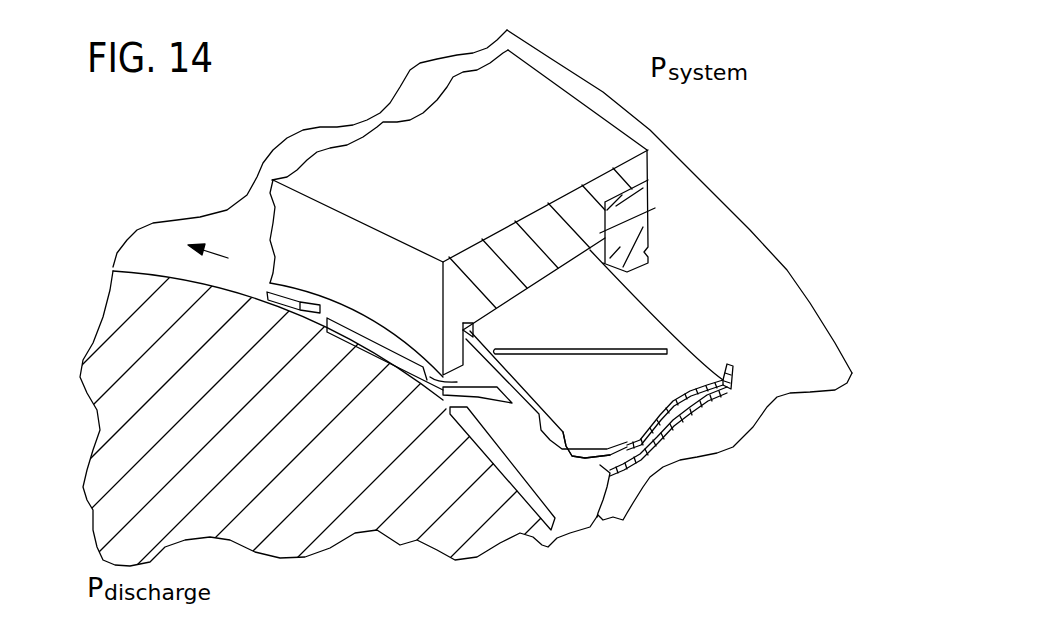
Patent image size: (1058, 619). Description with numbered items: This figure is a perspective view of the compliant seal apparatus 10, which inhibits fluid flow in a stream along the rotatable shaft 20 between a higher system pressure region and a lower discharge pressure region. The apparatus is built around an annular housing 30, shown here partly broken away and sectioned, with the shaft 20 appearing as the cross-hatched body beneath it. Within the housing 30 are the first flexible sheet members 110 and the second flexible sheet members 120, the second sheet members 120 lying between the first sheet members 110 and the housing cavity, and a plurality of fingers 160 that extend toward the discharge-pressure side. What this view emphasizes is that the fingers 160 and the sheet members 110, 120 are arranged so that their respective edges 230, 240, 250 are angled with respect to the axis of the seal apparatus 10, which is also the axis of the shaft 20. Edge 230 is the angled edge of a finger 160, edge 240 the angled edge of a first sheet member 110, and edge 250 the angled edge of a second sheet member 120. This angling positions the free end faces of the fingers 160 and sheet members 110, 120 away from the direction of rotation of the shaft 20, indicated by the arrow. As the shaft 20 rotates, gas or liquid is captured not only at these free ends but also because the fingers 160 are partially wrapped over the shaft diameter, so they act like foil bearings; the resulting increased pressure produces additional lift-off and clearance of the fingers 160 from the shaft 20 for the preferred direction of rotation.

The compliant seal apparatus 10 is at (820, 111).
The rotatable shaft 20 is at (783, 283).
The annular housing 30 is at (542, 68).
The first flexible sheet member 110 is at (518, 409).
The second flexible sheet member 120 is at (640, 297).
The finger 160 is at (457, 382).
The edge of finger 230 is at (467, 443).
The edge of first sheet member 240 is at (552, 445).
The edge of second sheet member 250 is at (572, 350).